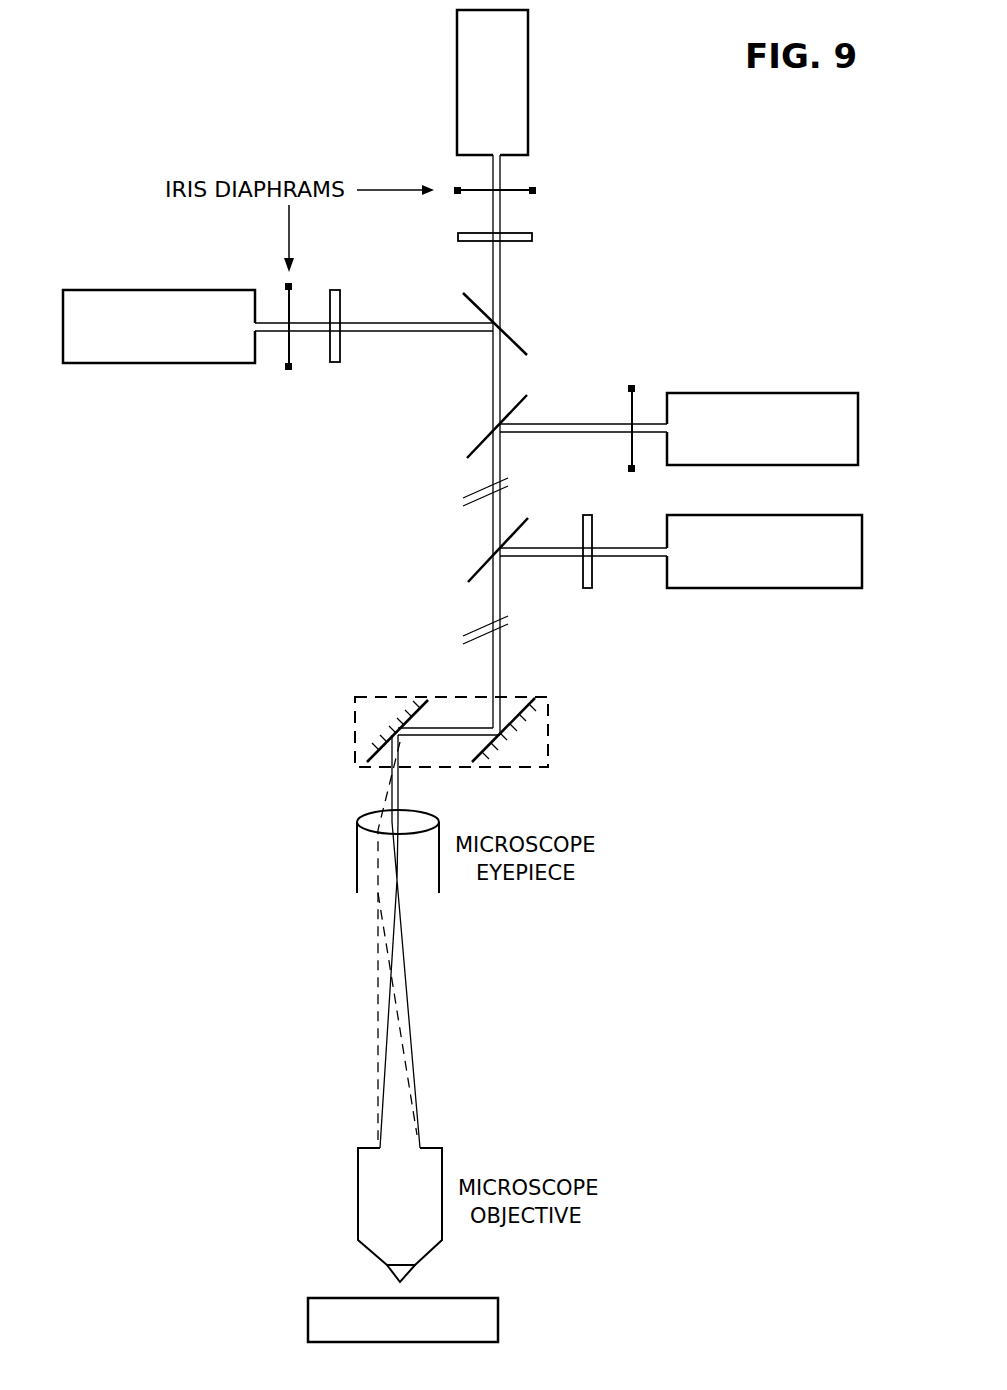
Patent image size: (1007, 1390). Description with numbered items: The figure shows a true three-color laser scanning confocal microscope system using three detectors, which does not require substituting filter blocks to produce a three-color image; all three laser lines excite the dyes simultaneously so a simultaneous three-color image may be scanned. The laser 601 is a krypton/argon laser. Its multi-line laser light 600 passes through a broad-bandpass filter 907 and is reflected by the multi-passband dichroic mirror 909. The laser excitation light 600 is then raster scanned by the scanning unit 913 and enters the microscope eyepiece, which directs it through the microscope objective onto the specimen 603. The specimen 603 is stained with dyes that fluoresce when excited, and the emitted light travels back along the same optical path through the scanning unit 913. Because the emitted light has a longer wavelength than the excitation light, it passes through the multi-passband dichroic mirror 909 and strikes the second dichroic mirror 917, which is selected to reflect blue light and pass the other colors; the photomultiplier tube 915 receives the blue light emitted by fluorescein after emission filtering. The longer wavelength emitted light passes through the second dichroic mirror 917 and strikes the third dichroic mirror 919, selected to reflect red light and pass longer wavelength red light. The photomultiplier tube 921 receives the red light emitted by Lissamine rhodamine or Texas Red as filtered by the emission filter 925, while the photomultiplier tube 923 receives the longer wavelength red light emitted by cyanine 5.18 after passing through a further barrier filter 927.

The photomultiplier tube 921 is at (528, 97).
The emission filter 925 is at (518, 236).
The photomultiplier tube 923 is at (140, 288).
The barrier filter BF2 927 is at (338, 291).
The third dichroic mirror 919 is at (510, 336).
The second dichroic mirror 917 is at (526, 403).
The photomultiplier tube 915 is at (770, 393).
The multi-passband dichroic mirror 909 is at (525, 531).
The broad-bandpass filter 907 is at (586, 514).
The laser 601 is at (770, 515).
The multi-line laser light 600 is at (632, 557).
The scanning unit 913 is at (405, 695).
The specimen 603 is at (322, 1297).